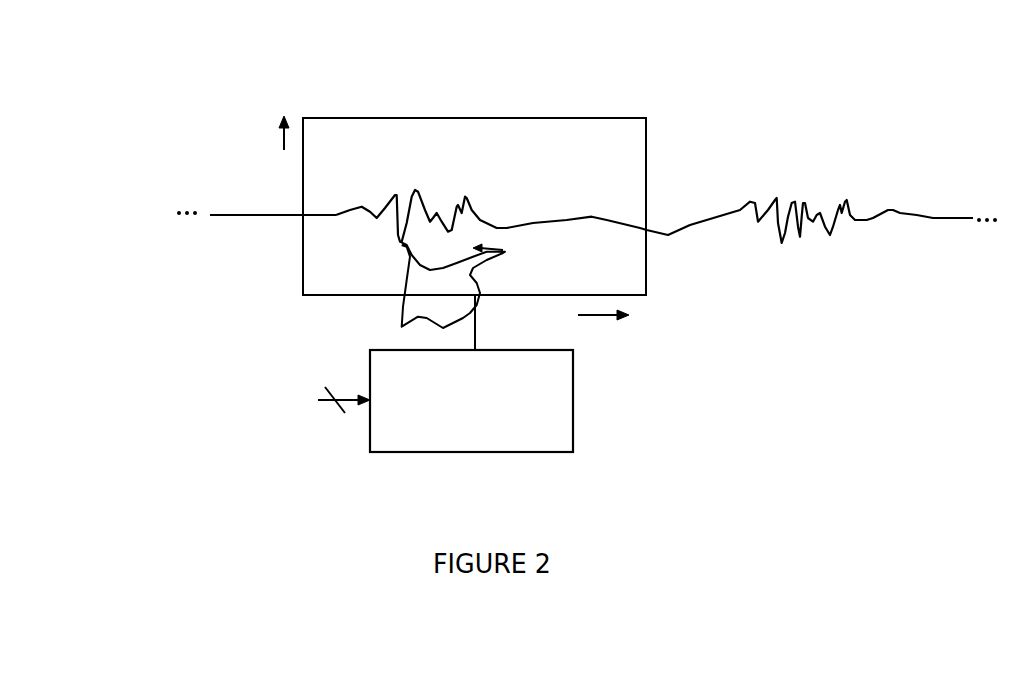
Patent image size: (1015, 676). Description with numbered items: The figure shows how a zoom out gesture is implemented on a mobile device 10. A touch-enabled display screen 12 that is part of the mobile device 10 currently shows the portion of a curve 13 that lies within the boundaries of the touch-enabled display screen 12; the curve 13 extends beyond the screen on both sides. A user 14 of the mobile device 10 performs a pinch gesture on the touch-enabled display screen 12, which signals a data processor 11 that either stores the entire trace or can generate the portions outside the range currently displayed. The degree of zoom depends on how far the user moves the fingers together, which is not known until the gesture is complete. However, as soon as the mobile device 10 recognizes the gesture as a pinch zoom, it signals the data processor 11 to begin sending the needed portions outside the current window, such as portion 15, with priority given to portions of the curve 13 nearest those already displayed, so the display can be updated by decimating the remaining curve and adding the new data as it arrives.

The mobile device 10 is at (278, 100).
The data processor 11 is at (573, 387).
The touch-enabled display screen 12 is at (528, 118).
The curve 13 is at (933, 218).
The user 14 is at (417, 302).
The portion 15 is at (663, 192).